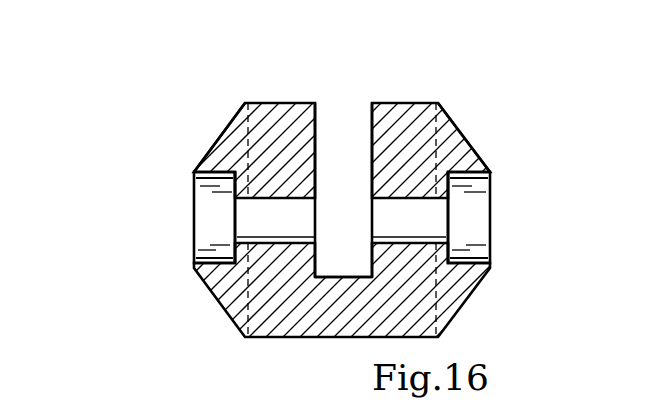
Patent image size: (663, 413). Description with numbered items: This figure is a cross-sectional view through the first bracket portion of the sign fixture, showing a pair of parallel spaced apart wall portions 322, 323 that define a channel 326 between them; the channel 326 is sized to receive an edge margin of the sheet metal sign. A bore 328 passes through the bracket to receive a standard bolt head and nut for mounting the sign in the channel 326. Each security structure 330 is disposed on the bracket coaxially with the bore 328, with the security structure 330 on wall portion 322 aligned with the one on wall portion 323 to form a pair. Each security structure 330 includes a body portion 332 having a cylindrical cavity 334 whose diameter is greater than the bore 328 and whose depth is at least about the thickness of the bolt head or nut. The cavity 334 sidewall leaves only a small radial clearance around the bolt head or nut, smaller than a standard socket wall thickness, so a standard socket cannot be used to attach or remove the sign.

The wall portion 322 is at (420, 112).
The wall portion 323 is at (287, 113).
The channel 326 is at (345, 95).
The bore 328 is at (244, 206).
The security structure 330 is at (215, 138).
The body portion 332 is at (228, 296).
The cylindrical cavity 334 is at (186, 243).